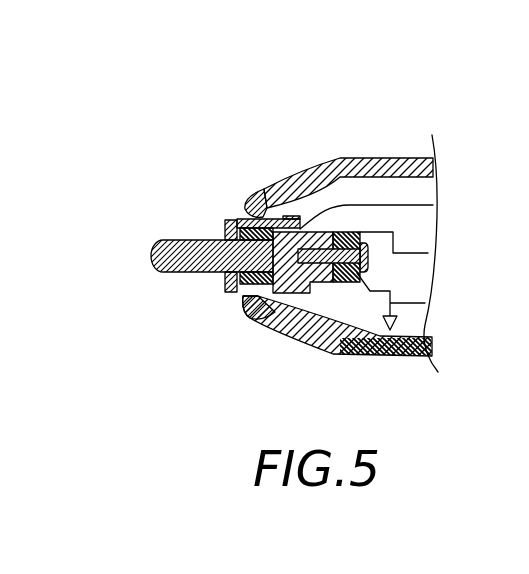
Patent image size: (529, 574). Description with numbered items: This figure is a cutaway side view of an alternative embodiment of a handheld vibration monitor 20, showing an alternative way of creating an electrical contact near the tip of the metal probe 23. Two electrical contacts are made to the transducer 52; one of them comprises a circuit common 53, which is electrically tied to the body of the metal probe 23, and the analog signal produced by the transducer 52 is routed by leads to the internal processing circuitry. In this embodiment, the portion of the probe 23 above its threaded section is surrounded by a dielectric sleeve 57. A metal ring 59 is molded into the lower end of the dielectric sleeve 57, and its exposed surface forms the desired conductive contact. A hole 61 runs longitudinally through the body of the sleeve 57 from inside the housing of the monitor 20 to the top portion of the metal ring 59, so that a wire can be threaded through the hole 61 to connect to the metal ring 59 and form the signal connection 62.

The connector assembly 20 is at (210, 114).
The probe 23 is at (173, 222).
The transducer 52 is at (350, 283).
The circuit common 53 is at (408, 306).
The dielectric sleeve 57 is at (253, 306).
The metal ring 59 is at (224, 292).
The hole 61 is at (256, 205).
The signal connection 62 is at (346, 159).